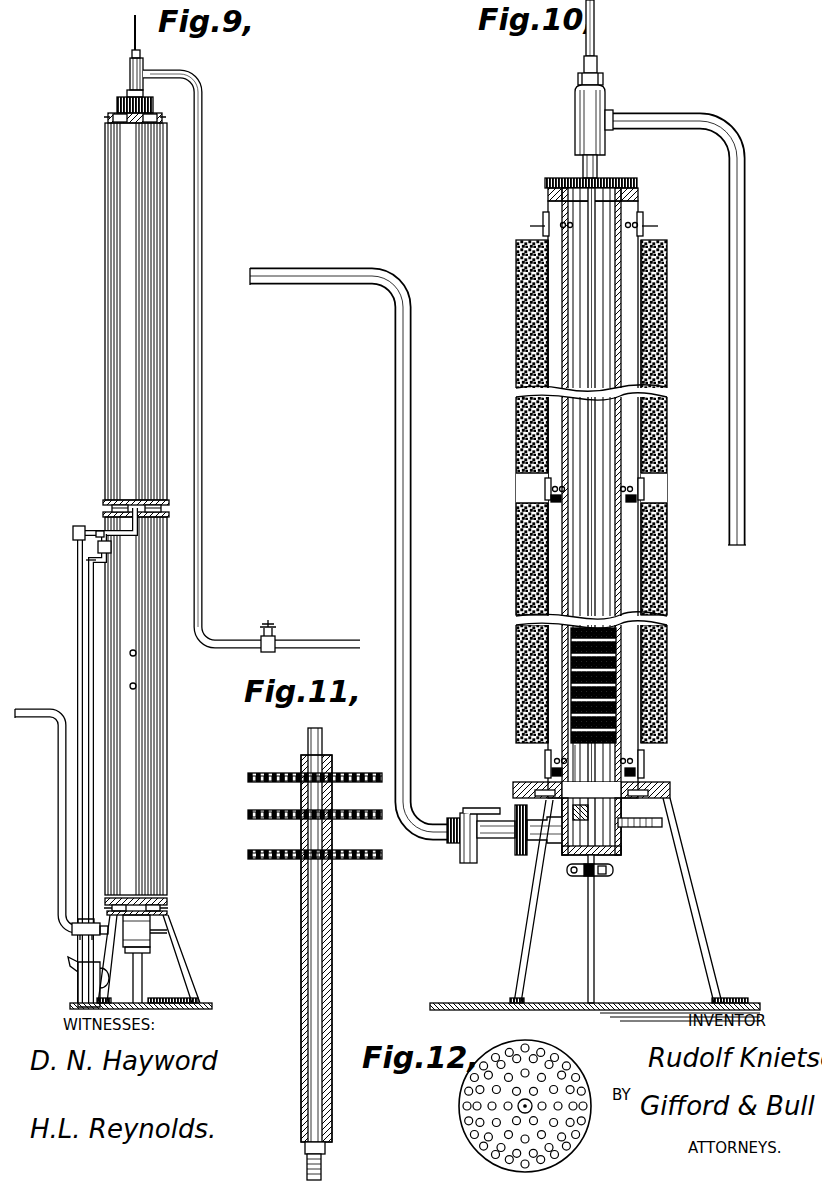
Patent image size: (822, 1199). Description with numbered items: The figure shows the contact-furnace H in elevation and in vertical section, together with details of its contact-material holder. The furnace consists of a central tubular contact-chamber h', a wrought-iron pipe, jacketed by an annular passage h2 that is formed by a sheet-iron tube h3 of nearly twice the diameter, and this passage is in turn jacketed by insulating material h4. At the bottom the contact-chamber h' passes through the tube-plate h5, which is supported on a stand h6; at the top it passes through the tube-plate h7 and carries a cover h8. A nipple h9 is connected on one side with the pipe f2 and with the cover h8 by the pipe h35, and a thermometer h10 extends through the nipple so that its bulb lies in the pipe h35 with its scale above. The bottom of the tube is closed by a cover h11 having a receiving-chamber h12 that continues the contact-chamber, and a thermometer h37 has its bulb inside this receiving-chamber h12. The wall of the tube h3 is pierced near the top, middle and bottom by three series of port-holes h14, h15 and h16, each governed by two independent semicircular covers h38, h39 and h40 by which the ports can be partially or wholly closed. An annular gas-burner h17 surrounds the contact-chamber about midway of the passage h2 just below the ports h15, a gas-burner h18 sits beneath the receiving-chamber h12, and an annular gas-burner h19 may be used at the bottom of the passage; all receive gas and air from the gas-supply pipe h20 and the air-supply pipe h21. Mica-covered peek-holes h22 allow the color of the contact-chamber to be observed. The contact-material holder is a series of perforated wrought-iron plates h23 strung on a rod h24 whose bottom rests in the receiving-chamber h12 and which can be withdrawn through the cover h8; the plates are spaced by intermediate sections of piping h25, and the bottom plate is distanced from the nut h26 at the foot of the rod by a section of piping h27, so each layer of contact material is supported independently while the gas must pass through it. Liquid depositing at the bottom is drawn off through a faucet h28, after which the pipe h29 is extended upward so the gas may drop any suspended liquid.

In FIG. 9, the gas-supply pipe h20 is at (72, 660).
In FIG. 9, the air-supply pipe h21 is at (89, 688).
In FIG. 9, the mica-covered peek-holes h22 is at (137, 652).
In FIG. 9, the faucet h28 is at (70, 930).
In FIG. 10, the faucet h28 is at (466, 863).
In FIG. 9, the pipe h29 is at (58, 820).
In FIG. 10, the pipe h29 is at (413, 692).
In FIG. 9, the pipe f2 is at (204, 576).
In FIG. 10, the pipe f2 is at (746, 489).
In FIG. 10, the thermometer h10 is at (596, 15).
In FIG. 10, the nipple h9 is at (575, 118).
In FIG. 10, the pipe h35 is at (583, 163).
In FIG. 10, the cover h8 is at (628, 182).
In FIG. 10, the tube-plate h7 is at (638, 193).
In FIG. 10, the semicircular covers h38 is at (543, 222).
In FIG. 10, the port-holes h14 is at (644, 224).
In FIG. 10, the contact-furnace H is at (690, 449).
In FIG. 10, the contact-chamber h' is at (639, 516).
In FIG. 10, the semicircular covers h39 is at (545, 489).
In FIG. 10, the port-holes h15 is at (644, 489).
In FIG. 10, the sheet-iron tube h3 is at (660, 506).
In FIG. 10, the annular passage h2 is at (628, 522).
In FIG. 10, the insulating material h4 is at (660, 583).
In FIG. 10, the annular gas-burner h17 is at (548, 516).
In FIG. 10, the sections of piping h25 is at (617, 648).
In FIG. 11, the sections of piping h25 is at (286, 835).
In FIG. 10, the perforated wrought-iron plates h23 is at (617, 680).
In FIG. 11, the perforated wrought-iron plates h23 is at (358, 876).
In FIG. 12, the perforated wrought-iron plates h23 is at (565, 1062).
In FIG. 10, the section of piping h27 is at (573, 752).
In FIG. 11, the section of piping h27 is at (332, 1100).
In FIG. 10, the port-holes h16 is at (644, 758).
In FIG. 10, the semicircular covers h40 is at (543, 761).
In FIG. 10, the annular gas-burner h19 is at (551, 773).
In FIG. 10, the tube-plate h5 is at (655, 792).
In FIG. 10, the thermometer h37 is at (662, 822).
In FIG. 10, the cover h11 is at (605, 838).
In FIG. 10, the receiving-chamber h12 is at (621, 845).
In FIG. 10, the nut h26 is at (598, 862).
In FIG. 11, the nut h26 is at (325, 1148).
In FIG. 10, the gas-burner h18 is at (580, 878).
In FIG. 10, the stand h6 is at (697, 905).
In FIG. 11, the rod h24 is at (322, 738).